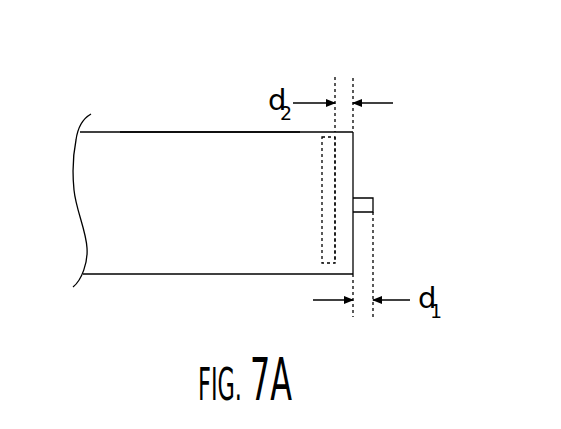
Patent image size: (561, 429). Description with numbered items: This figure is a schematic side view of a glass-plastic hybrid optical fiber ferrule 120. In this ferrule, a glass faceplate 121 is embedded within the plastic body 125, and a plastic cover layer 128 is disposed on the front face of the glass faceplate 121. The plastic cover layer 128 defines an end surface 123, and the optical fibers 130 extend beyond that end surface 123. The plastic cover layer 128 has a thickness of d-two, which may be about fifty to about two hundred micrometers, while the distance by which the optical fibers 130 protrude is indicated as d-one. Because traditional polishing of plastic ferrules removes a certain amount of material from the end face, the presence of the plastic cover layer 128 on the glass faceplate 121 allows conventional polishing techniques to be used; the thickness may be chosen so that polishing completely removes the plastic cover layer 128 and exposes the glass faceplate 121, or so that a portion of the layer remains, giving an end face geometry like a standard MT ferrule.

The optical fiber ferrule 120 is at (95, 91).
The plastic body 125 is at (142, 141).
The end surface 123 is at (353, 141).
The plastic cover layer 128 is at (345, 162).
The glass faceplate 121 is at (335, 174).
The optical fibers 130 is at (373, 204).